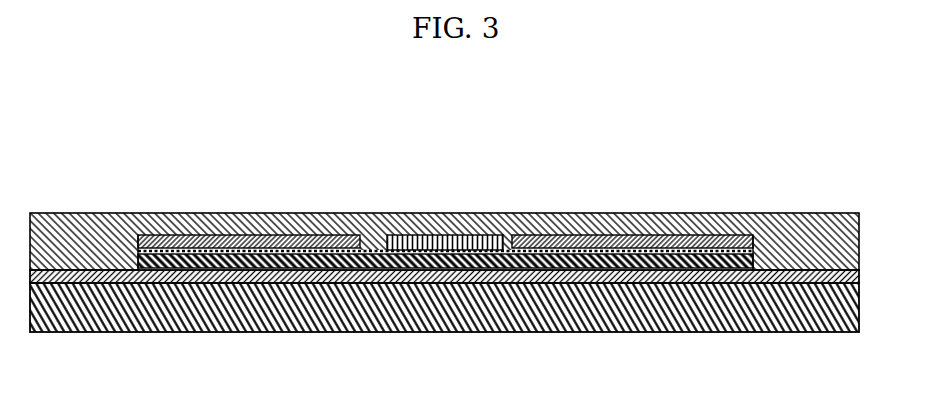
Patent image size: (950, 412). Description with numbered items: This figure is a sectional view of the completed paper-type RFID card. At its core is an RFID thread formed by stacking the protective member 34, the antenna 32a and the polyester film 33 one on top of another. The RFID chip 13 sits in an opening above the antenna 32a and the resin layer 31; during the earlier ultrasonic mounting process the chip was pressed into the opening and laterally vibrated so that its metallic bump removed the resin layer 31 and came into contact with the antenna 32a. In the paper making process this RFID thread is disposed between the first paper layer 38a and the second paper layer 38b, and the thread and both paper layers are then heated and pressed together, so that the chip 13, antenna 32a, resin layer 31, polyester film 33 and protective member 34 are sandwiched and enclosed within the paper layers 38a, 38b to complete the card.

The RFID chip 13 is at (412, 236).
The resin layer 31 is at (597, 235).
The antenna 32a is at (196, 235).
The polyester film 33 is at (55, 270).
The protective member 34 is at (545, 235).
The first paper layer 38a is at (127, 333).
The second paper layer 38b is at (108, 223).